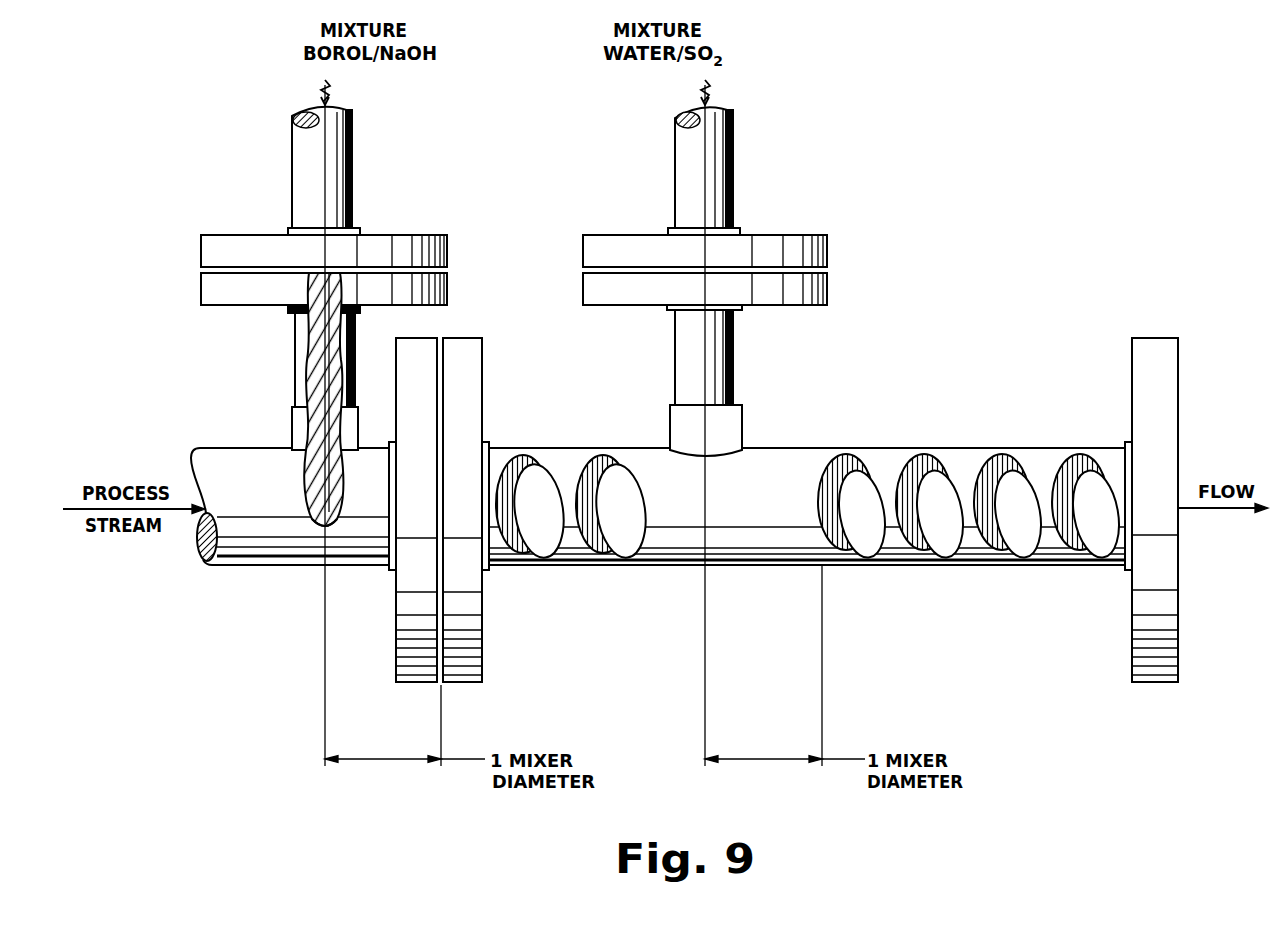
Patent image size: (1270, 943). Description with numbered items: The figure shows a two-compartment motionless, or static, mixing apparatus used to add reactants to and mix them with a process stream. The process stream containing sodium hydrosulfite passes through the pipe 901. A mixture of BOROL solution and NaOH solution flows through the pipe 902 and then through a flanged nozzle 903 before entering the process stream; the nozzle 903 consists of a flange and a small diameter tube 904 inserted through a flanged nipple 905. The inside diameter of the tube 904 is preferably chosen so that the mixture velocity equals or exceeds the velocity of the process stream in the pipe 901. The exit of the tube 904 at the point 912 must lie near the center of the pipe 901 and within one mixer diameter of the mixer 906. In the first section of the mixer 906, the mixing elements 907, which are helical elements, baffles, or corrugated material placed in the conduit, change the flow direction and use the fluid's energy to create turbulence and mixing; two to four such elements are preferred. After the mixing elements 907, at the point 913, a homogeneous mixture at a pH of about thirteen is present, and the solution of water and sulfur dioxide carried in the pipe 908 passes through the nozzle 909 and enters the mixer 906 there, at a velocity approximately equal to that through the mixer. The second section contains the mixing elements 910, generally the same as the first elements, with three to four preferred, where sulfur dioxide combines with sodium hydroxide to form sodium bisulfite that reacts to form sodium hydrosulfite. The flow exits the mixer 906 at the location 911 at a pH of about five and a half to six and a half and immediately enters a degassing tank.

The pipe 901 is at (253, 566).
The pipe 902 is at (351, 161).
The flanged nozzle 903 is at (441, 236).
The small diameter tube 904 is at (313, 340).
The flanged nipple 905 is at (448, 290).
The mixer 906 is at (620, 562).
The mixing elements 907 is at (542, 463).
The pipe 908 is at (733, 173).
The nozzle 909 is at (827, 288).
The mixing elements 910 is at (861, 458).
The location 911 is at (1180, 508).
The point 912 is at (323, 514).
The point 913 is at (703, 365).